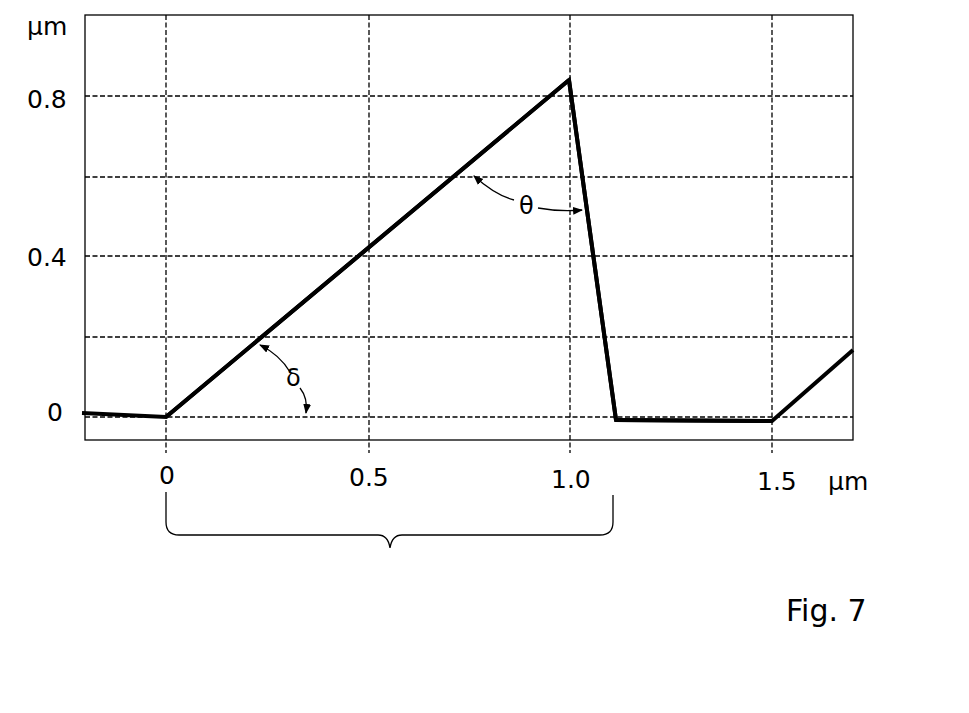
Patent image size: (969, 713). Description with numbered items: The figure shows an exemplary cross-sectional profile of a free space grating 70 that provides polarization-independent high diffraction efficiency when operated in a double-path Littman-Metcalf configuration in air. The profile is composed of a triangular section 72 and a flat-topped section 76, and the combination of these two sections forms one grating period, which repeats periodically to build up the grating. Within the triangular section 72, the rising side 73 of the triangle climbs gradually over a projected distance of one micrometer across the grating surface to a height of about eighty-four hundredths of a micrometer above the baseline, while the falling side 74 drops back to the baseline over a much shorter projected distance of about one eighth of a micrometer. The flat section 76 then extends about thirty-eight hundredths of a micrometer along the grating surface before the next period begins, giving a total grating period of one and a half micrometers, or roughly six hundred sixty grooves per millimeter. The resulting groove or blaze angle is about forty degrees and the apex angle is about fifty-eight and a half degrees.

The free space grating 70 is at (634, 242).
The triangular section 72 is at (389, 540).
The rising side of triangle 73 is at (392, 230).
The falling side of triangle 74 is at (578, 156).
The flat-topped section 76 is at (666, 419).